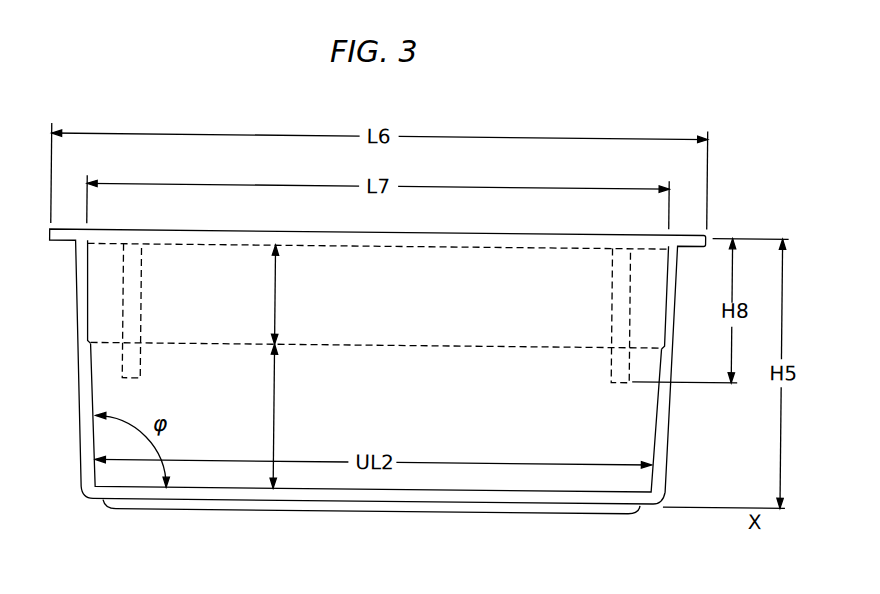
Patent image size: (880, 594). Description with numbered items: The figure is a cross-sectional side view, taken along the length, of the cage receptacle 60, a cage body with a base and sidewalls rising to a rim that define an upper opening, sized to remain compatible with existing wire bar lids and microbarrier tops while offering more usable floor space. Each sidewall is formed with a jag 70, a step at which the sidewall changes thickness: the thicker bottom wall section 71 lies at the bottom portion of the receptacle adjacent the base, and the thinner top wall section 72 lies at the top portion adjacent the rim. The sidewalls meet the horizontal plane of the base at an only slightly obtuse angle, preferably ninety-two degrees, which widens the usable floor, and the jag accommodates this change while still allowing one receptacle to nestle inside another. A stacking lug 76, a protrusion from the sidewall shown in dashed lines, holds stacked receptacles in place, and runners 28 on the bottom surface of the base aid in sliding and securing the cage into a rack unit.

The cage receptacle 60 is at (723, 214).
The jag 70 is at (503, 344).
The bottom wall section 71 is at (277, 386).
The top wall section 72 is at (277, 298).
The stacking lug 76 is at (612, 268).
The runners 28 is at (595, 510).